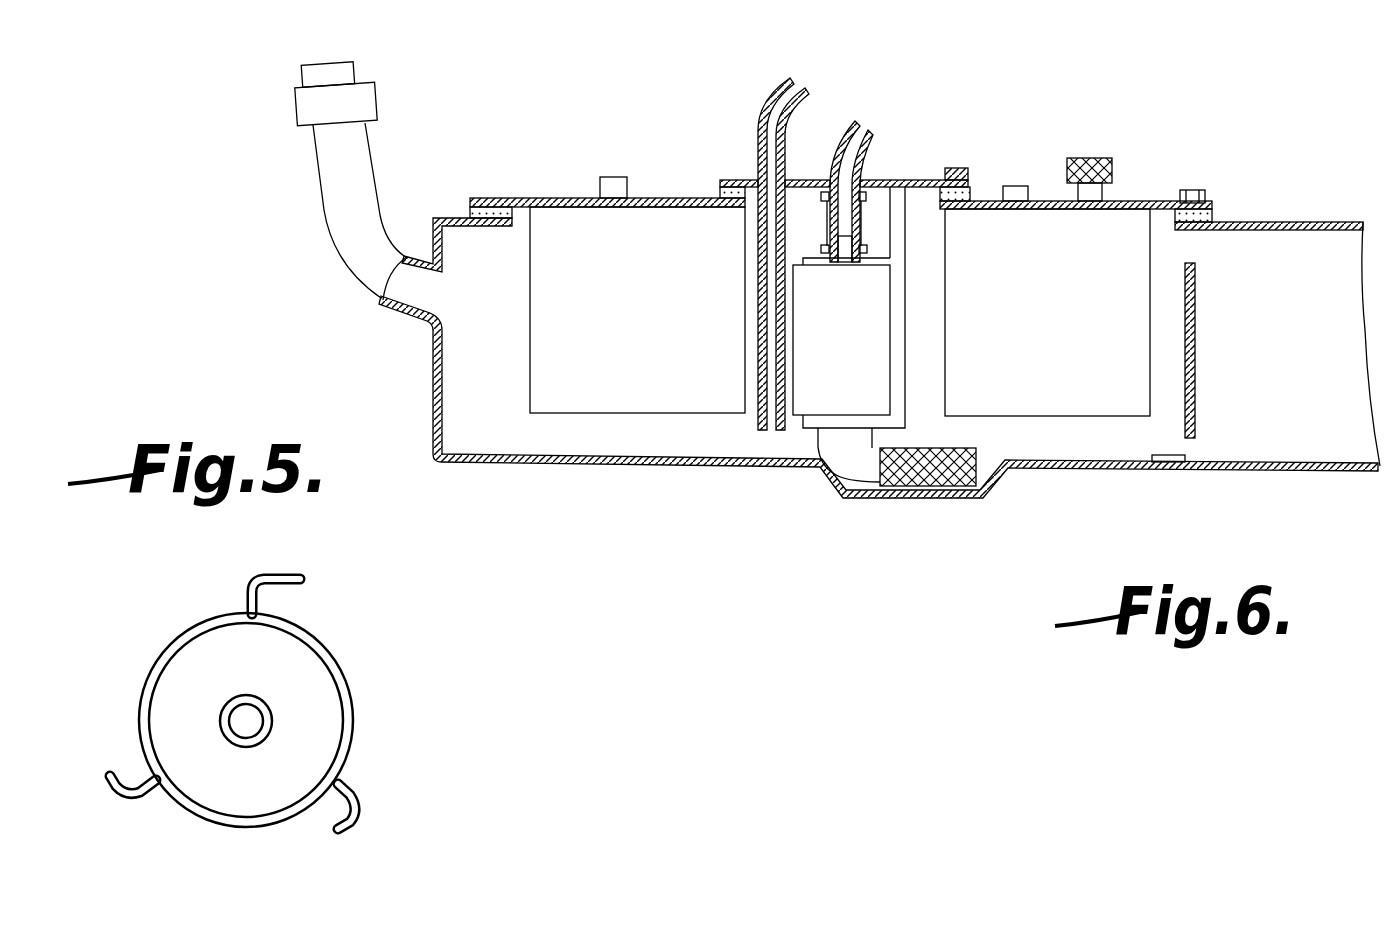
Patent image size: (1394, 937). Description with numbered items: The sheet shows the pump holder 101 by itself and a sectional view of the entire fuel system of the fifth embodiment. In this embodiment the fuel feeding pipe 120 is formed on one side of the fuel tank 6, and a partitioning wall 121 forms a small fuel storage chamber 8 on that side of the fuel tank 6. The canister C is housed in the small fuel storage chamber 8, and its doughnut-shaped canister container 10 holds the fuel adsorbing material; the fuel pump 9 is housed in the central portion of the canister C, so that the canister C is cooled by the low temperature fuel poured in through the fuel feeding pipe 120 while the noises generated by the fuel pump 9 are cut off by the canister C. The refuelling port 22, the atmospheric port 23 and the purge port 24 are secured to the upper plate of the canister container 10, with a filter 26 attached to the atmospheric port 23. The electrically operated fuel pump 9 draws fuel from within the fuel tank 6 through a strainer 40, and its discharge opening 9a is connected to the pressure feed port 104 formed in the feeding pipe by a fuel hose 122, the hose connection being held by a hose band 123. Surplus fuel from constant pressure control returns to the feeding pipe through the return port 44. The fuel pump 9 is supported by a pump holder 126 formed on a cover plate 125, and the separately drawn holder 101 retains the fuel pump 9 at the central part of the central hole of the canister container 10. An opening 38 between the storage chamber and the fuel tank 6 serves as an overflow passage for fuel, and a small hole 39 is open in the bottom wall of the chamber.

In FIG. 5, the fuel tank 6 is at (1315, 471).
In FIG. 5, the small fuel storage chamber 8 is at (587, 445).
In FIG. 5, the fuel pump 9 is at (808, 407).
In FIG. 6, the fuel pump 9 is at (318, 755).
In FIG. 5, the discharge opening 9a is at (842, 258).
In FIG. 6, the discharge opening 9a is at (274, 721).
In FIG. 6, the canister container 10 is at (305, 840).
In FIG. 5, the refuelling port 22 is at (1030, 183).
In FIG. 5, the atmospheric port 23 is at (1098, 198).
In FIG. 5, the purge port 24 is at (612, 177).
In FIG. 5, the filter 26 is at (1112, 164).
In FIG. 5, the opening 38 is at (1193, 248).
In FIG. 5, the small hole 39 is at (1193, 445).
In FIG. 5, the strainer 40 is at (920, 482).
In FIG. 5, the return port 44 is at (765, 108).
In FIG. 6, the holder 101 is at (349, 680).
In FIG. 5, the pressure feed port 104 is at (865, 133).
In FIG. 5, the fuel feeding pipe 120 is at (333, 232).
In FIG. 5, the partitioning wall 121 is at (1196, 366).
In FIG. 5, the fuel hose 122 is at (866, 196).
In FIG. 5, the hose band 123 is at (866, 251).
In FIG. 5, the cover plate 125 is at (940, 170).
In FIG. 5, the pump holder 126 is at (897, 372).